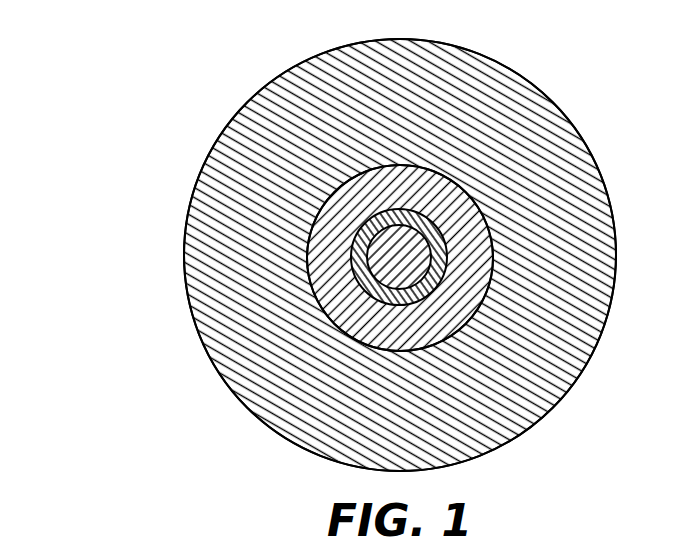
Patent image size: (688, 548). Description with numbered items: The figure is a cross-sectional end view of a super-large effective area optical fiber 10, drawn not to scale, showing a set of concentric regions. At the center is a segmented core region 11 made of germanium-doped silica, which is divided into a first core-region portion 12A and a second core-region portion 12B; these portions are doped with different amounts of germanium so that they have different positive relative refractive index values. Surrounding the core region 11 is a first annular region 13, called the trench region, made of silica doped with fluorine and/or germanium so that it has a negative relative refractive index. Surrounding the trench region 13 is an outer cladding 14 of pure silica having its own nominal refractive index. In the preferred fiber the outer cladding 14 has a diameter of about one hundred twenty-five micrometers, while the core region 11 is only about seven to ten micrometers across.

The super-large effective area optical fiber 10 is at (177, 77).
The segmented central core region 11 is at (392, 223).
The first core-region portion 12A is at (377, 300).
The second core-region portion 12B is at (447, 328).
The first annular region (trench region) 13 is at (328, 230).
The outer cladding 14 is at (245, 258).